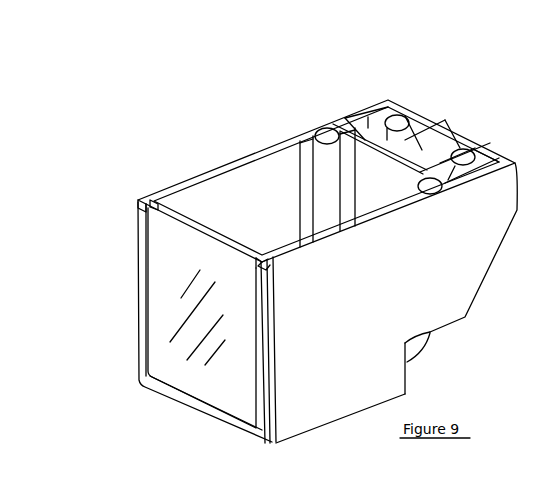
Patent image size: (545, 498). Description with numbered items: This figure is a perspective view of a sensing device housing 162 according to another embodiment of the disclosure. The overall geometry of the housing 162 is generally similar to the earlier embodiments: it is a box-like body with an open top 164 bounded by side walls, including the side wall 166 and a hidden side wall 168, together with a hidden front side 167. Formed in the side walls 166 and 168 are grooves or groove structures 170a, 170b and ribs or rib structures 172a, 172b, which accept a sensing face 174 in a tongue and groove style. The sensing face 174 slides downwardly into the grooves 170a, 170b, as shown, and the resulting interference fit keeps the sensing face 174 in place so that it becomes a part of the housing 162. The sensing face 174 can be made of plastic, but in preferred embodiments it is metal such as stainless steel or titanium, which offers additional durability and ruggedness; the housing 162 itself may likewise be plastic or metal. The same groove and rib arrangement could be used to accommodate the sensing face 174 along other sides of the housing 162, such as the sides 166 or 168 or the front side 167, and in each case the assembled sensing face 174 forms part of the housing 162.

The sensing device housing 162 is at (240, 154).
The open top 164 is at (110, 337).
The side wall 166 is at (358, 342).
The front side 167 is at (359, 418).
The side wall 168 is at (266, 142).
The groove structure 170a is at (142, 197).
The groove structure 170b is at (268, 268).
The rib structure 172a is at (156, 186).
The rib structure 172b is at (261, 258).
The sensing face 174 is at (207, 386).